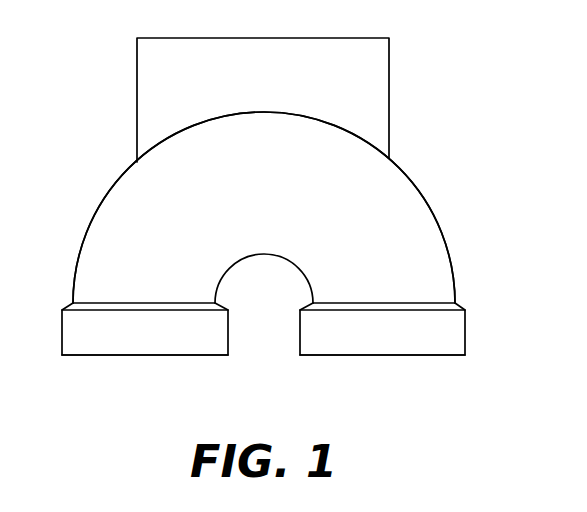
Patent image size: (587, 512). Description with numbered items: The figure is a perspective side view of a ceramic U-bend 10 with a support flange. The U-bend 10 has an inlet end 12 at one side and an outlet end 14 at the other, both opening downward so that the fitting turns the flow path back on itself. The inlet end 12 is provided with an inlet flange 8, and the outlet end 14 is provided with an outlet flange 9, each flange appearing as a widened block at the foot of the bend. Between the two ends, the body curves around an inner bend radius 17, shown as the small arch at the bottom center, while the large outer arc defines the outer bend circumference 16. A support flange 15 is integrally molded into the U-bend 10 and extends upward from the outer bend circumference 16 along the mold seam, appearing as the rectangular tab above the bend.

The U-bend 10 is at (453, 178).
The support flange 15 is at (152, 108).
The outer bend circumference 16 is at (112, 185).
The inner bend radius 17 is at (248, 258).
The inlet flange 8 is at (70, 333).
The outlet flange 9 is at (457, 333).
The inlet end 12 is at (82, 362).
The outlet end 14 is at (445, 362).